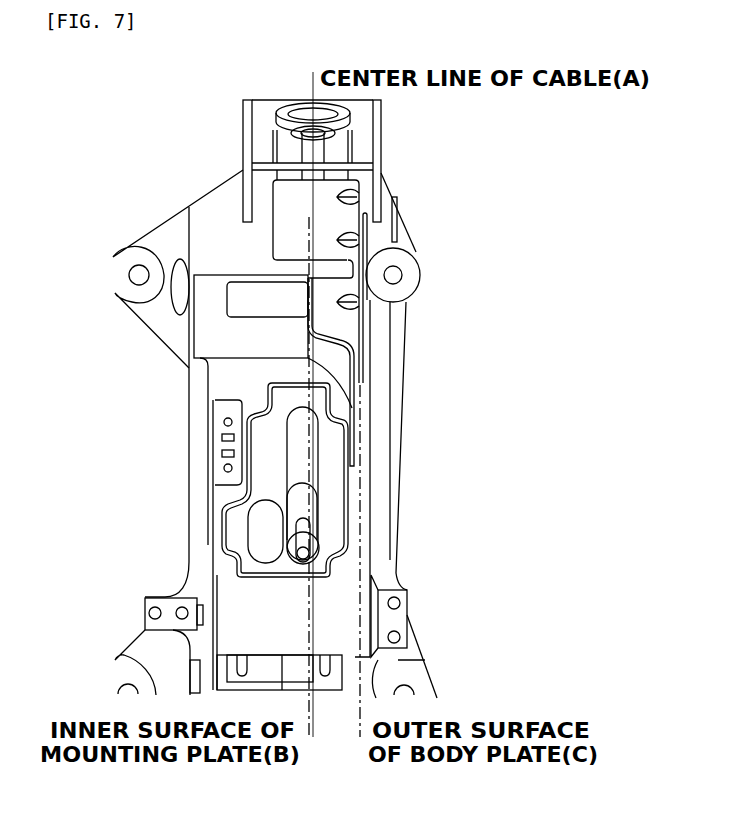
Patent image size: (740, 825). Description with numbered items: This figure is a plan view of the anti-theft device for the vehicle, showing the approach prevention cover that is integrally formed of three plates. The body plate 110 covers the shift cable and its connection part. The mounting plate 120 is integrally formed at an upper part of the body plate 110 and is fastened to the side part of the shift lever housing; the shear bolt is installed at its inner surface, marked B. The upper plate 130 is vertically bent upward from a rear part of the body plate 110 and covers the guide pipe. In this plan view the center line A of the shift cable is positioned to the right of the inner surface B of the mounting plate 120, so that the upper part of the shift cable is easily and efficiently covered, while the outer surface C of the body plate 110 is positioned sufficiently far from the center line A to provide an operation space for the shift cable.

The body plate 110 is at (357, 375).
The mounting plate 120 is at (303, 305).
The upper plate 130 is at (330, 222).